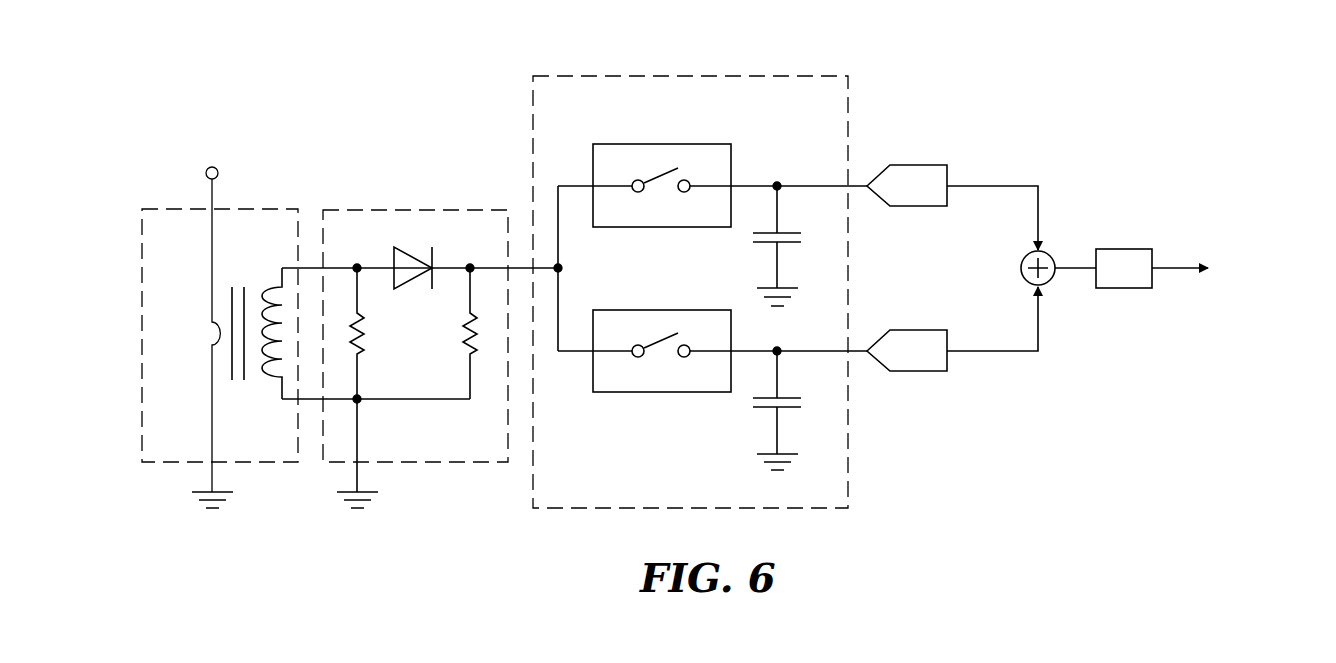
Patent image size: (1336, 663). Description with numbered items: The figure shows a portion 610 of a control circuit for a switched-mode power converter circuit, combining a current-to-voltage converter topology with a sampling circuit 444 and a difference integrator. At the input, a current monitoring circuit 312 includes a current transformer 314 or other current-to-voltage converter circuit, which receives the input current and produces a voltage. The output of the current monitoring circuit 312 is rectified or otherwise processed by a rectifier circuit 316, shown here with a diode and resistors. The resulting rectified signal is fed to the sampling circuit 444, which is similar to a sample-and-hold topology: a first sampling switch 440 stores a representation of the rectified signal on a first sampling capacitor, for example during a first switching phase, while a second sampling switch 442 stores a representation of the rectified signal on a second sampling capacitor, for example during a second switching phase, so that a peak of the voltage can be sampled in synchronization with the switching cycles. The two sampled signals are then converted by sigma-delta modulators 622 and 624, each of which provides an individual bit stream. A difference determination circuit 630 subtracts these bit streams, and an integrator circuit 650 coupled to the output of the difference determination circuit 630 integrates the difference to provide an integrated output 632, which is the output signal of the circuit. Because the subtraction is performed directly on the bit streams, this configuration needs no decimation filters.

The portion of a control circuit 610 is at (204, 58).
The current monitoring circuit 312 is at (188, 208).
The current transformer 314 is at (208, 334).
The rectifier circuit 316 is at (417, 210).
The sampling circuit 444 is at (692, 76).
The first sampling switch 440 is at (662, 144).
The second sampling switch 442 is at (662, 310).
The sigma-delta modulator 622 is at (918, 165).
The sigma-delta modulator 624 is at (918, 330).
The difference determination circuit 630 is at (1047, 254).
The integrated output 632 is at (1173, 268).
The integrator circuit 650 is at (1125, 288).